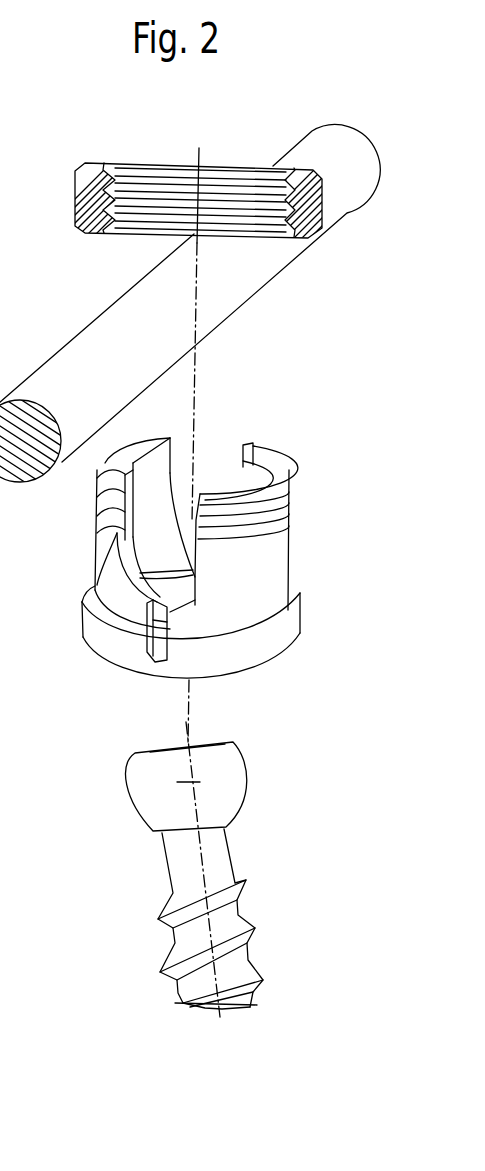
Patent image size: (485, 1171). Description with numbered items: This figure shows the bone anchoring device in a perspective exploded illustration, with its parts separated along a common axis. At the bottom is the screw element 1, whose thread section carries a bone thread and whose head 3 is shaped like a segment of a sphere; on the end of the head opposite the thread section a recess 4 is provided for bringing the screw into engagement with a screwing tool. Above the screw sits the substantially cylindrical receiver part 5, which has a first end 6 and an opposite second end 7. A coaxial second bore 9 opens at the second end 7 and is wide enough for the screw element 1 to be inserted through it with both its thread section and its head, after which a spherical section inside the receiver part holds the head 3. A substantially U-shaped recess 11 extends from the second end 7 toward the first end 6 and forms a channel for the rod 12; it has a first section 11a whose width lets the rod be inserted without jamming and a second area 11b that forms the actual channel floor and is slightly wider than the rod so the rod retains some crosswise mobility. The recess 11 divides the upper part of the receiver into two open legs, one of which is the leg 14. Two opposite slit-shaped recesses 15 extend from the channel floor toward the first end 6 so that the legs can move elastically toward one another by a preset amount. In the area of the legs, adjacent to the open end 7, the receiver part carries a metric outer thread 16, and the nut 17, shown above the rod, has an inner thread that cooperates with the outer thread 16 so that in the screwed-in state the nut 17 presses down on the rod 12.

The screw element 1 is at (242, 908).
The head 3 is at (230, 792).
The recess 4 is at (204, 743).
The receiver part 5 is at (290, 582).
The first end 6 is at (158, 676).
The second end 7 is at (153, 440).
The second bore 9 is at (170, 466).
The recess 11 is at (147, 551).
The first section 11a is at (145, 497).
The second area 11b is at (115, 582).
The rod 12 is at (97, 340).
The open leg 14 is at (272, 552).
The slit-shaped recesses 15 is at (144, 631).
The outer thread 16 is at (282, 493).
The nut 17 is at (103, 168).